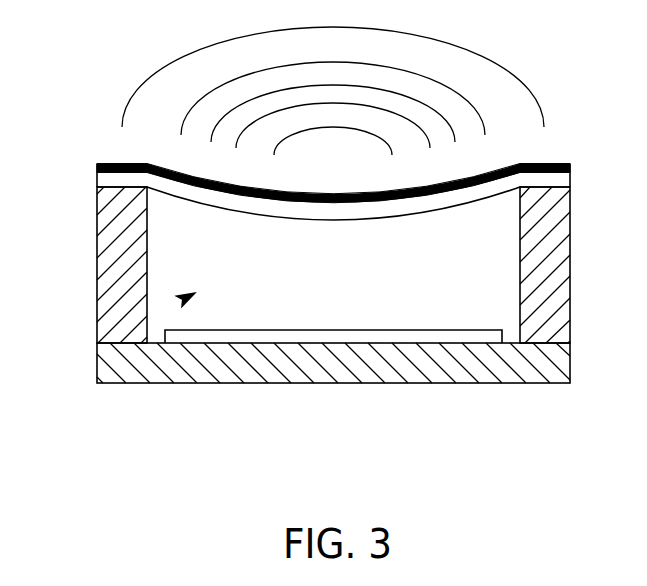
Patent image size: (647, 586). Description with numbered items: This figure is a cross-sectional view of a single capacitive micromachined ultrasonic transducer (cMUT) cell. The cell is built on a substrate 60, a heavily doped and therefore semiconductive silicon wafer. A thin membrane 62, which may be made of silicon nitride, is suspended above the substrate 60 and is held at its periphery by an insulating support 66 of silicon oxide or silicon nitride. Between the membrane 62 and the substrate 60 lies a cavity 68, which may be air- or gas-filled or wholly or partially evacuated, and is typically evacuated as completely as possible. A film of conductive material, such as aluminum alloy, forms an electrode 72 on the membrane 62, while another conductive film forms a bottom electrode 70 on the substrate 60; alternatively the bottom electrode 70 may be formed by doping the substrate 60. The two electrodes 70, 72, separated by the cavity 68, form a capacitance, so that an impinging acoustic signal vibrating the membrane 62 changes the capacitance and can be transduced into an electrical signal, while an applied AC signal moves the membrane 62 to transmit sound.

The substrate 60 is at (245, 364).
The membrane 62 is at (425, 207).
The insulating support 66 is at (97, 248).
The cavity 68 is at (182, 299).
The bottom electrode 70 is at (458, 335).
The electrode 72 is at (478, 176).